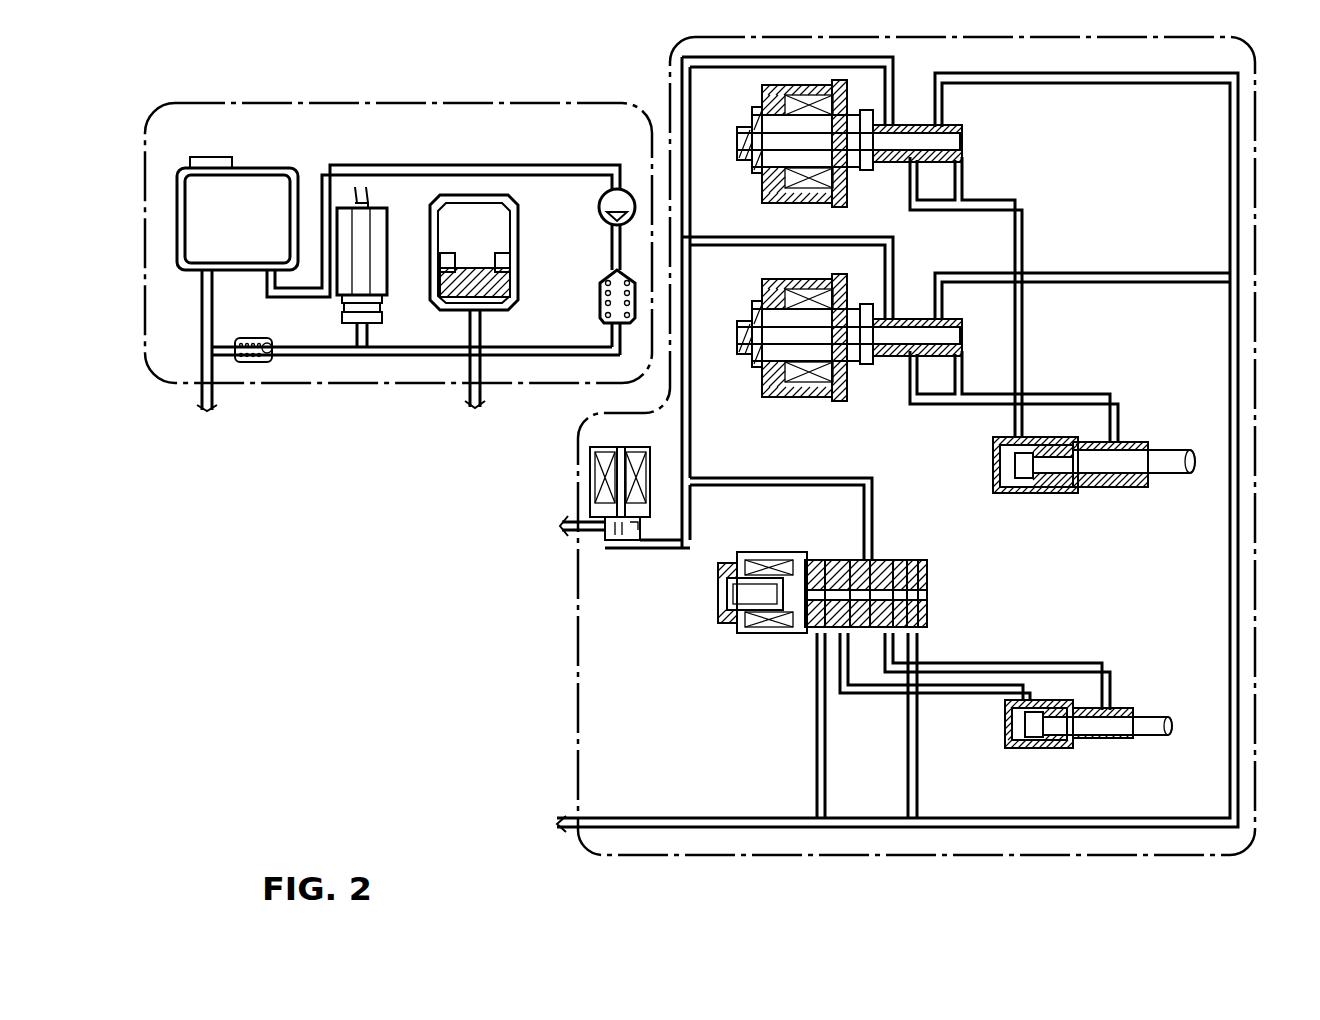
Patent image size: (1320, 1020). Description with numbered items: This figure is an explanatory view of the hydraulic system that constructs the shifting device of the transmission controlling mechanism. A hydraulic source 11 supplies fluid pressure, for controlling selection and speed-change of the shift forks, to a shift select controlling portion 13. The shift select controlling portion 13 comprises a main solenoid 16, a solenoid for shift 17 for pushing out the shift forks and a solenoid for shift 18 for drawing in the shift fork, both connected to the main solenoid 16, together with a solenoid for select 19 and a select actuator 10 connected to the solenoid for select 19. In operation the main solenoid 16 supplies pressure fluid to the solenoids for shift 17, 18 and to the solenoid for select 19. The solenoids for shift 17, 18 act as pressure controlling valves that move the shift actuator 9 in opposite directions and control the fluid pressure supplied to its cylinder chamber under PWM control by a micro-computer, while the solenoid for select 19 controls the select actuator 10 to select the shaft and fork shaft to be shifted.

The shift actuator 9 is at (1123, 446).
The select actuator 10 is at (1118, 712).
The hydraulic source 11 is at (431, 125).
The shift select controlling portion 13 is at (1238, 172).
The main solenoid 16 is at (608, 550).
The solenoid for shift 17 is at (740, 122).
The solenoid for shift 18 is at (763, 292).
The solenoid for select 19 is at (722, 562).